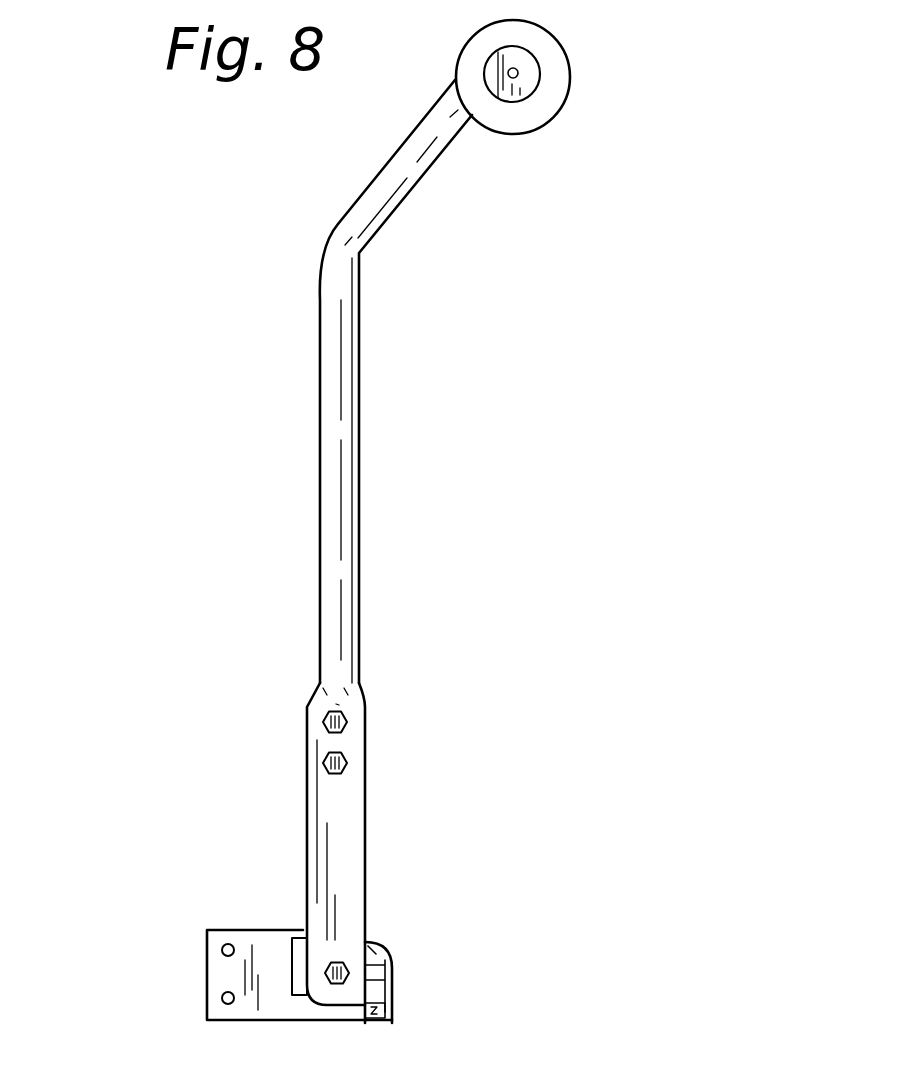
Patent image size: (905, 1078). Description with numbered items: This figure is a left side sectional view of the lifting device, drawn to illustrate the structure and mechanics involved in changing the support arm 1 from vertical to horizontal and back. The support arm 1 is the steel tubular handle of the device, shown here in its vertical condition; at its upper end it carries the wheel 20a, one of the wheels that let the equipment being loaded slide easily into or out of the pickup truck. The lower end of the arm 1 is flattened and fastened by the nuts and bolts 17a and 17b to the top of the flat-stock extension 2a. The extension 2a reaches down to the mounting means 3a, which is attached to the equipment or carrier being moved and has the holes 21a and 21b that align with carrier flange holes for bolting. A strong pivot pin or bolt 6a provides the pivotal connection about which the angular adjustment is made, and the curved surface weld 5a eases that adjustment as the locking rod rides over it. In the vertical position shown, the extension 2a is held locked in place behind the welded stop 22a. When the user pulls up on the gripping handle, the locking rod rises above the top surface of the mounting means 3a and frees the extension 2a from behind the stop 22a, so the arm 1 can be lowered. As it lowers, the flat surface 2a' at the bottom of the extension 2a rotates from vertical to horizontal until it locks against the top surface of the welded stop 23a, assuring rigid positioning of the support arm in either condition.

The support arm handle 1 is at (350, 453).
The wheel 20a is at (542, 115).
The extension 2a is at (411, 853).
The flat surface 2a' is at (435, 974).
The mounting means 3a is at (236, 931).
The curved surface weld 5a is at (375, 950).
The pivot pin or bolt 6a is at (349, 975).
The nut and bolt 17a is at (347, 722).
The nut and bolt 17b is at (348, 765).
The hole 21a is at (222, 950).
The hole 21b is at (222, 998).
The welded stop 22a is at (293, 941).
The welded stop 23a is at (370, 1020).